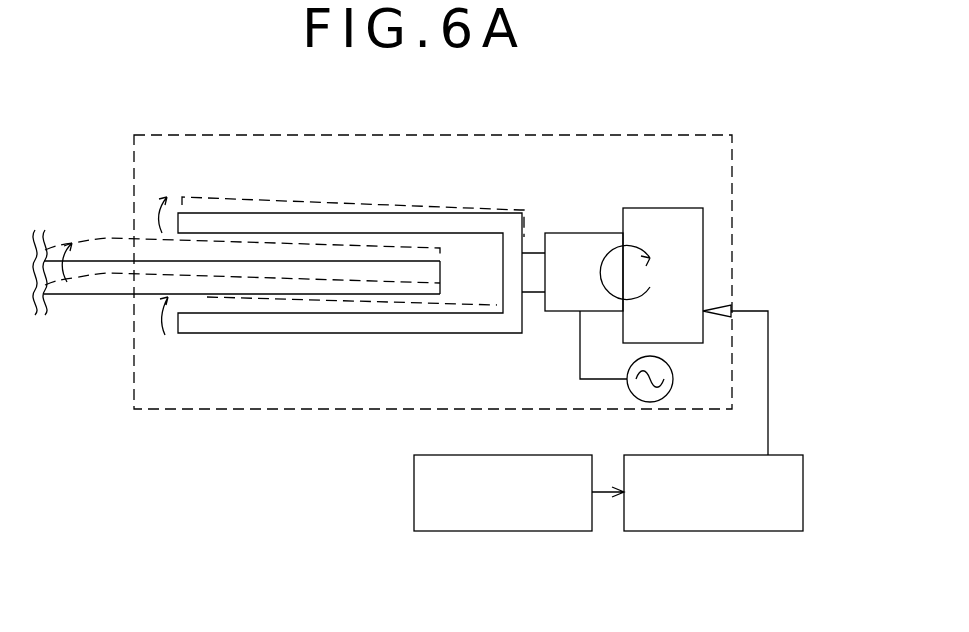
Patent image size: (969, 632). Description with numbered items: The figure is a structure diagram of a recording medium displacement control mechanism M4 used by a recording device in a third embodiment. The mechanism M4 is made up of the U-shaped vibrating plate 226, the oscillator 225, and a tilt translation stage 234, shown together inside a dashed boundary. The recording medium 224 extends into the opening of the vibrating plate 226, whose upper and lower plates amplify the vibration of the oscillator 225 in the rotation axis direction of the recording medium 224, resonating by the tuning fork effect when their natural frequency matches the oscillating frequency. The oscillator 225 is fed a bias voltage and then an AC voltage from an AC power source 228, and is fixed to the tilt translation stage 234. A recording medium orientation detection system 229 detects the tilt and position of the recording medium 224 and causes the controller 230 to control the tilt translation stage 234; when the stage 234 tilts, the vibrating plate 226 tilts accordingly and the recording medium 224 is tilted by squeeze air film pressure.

The recording medium 224 is at (98, 295).
The oscillator 225 is at (575, 242).
The vibrating plate 226 is at (517, 333).
The AC power source 228 is at (675, 388).
The recording medium orientation detection system 229 is at (577, 518).
The controller 230 is at (763, 520).
The tilt translation stage 234 is at (665, 224).
The displacement control mechanism M4 is at (723, 135).